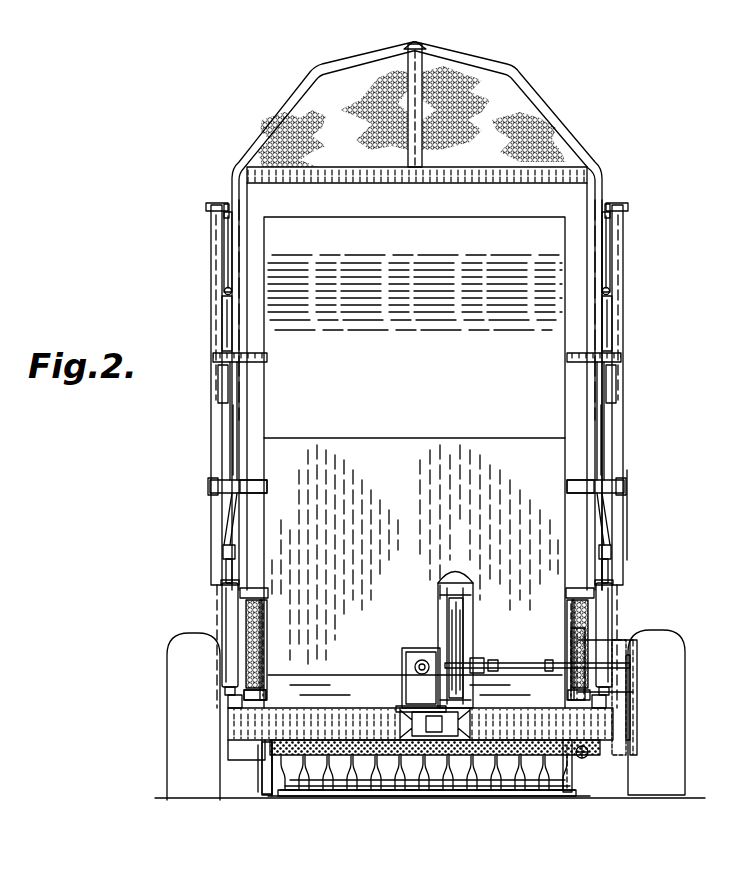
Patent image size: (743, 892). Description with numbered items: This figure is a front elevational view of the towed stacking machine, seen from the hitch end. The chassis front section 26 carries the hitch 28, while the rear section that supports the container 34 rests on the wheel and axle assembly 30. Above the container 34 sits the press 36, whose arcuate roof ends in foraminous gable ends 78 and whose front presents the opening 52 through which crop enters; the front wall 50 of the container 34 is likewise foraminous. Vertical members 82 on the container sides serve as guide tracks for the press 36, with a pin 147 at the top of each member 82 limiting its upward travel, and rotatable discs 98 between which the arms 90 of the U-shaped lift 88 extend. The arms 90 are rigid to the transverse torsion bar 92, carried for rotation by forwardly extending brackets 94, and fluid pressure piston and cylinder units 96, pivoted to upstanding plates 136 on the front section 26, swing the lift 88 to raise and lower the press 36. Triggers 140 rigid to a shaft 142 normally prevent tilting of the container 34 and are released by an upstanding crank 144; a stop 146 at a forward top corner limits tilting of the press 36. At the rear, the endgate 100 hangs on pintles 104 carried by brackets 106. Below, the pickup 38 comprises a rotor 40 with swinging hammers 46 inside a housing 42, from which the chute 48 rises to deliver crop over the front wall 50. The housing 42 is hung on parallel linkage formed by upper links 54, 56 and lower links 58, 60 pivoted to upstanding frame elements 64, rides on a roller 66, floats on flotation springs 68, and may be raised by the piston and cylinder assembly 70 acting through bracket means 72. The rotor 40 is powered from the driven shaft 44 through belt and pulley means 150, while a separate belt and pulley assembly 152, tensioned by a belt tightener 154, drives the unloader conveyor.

The front section 26 is at (252, 742).
The hitch 28 is at (415, 722).
The wheel and axle assembly 30 is at (673, 672).
The container 34 is at (628, 443).
The press 36 is at (546, 92).
The pickup 38 is at (450, 795).
The rotor 40 is at (378, 775).
The housing 42 is at (282, 800).
The driven shaft 44 is at (418, 662).
The swinging hammers 46 is at (500, 793).
The chute 48 is at (414, 462).
The front wall 50 is at (580, 410).
The opening 52 is at (570, 188).
The upper link 54 is at (570, 640).
The upper link 56 is at (262, 640).
The lower link 58 is at (572, 777).
The lower link 60 is at (268, 790).
The upstanding frame elements 64 is at (262, 665).
The roller 66 is at (335, 797).
The flotation springs 68 is at (272, 607).
The fluid pressure piston and cylinder assembly 70 is at (462, 630).
The bracket means 72 is at (460, 575).
The gable ends 78 is at (360, 78).
The vertical members 82 is at (222, 320).
The lift 88 is at (265, 507).
The arms 90 is at (235, 452).
The torsion bar 92 is at (568, 478).
The brackets 94 is at (222, 500).
The fluid pressure piston and cylinder units 96 is at (223, 600).
The rotatable discs 98 is at (240, 293).
The endgate 100 is at (228, 268).
The pintles 104 is at (210, 205).
The brackets 106 is at (215, 235).
The upstanding plates 136 is at (220, 713).
The triggers 140 is at (256, 703).
The shaft 142 is at (268, 700).
The crank 144 is at (600, 650).
The stop 146 is at (213, 358).
The pin 147 is at (222, 292).
The belt and pulley means 150 is at (583, 755).
The belt and pulley assembly 152 is at (640, 715).
The belt tightener 154 is at (633, 645).